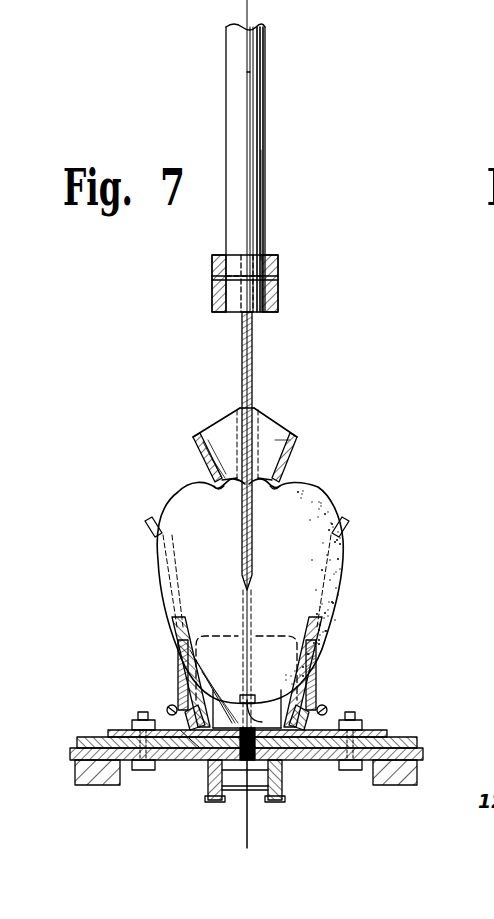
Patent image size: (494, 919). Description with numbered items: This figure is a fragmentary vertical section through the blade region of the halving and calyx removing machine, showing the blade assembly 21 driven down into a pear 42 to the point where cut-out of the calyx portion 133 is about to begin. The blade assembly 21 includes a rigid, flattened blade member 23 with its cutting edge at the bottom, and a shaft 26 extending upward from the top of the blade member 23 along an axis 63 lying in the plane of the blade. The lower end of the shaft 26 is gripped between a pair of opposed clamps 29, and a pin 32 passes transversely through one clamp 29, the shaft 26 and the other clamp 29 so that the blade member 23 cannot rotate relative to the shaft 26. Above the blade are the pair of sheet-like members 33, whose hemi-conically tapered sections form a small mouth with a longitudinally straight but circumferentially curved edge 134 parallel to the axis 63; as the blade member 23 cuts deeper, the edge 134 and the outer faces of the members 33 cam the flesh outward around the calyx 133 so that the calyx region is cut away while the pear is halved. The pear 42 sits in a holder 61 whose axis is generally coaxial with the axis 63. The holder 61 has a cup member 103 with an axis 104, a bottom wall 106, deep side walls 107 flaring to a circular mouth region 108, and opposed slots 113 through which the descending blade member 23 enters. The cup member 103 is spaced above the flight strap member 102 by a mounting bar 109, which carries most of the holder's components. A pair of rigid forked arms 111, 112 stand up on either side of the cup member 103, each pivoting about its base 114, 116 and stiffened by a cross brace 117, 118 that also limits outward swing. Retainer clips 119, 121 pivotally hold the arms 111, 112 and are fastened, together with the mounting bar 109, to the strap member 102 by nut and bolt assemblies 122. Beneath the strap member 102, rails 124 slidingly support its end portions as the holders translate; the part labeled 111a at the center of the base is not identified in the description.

The blade assembly 21 is at (272, 116).
The axis 63 is at (246, 72).
The shaft 26 is at (272, 200).
The clamps 29 is at (278, 301).
The pin 32 is at (212, 278).
The blade member 23 is at (241, 540).
The sheet-like members 33 is at (196, 443).
The calyx portion 133 is at (278, 442).
The edge 134 is at (207, 485).
The pear 42 is at (167, 516).
The arm 111 is at (145, 528).
The arm 112 is at (352, 528).
The slots 113 is at (262, 637).
The holder 61 is at (172, 632).
The cup member 103 is at (180, 665).
The cross brace 117 is at (168, 707).
The side walls 107 is at (318, 670).
The mouth region 108 is at (312, 648).
The cross brace 118 is at (326, 707).
The bottom wall 106 is at (215, 762).
The base 116 is at (302, 762).
The center boss 111a is at (280, 768).
The retainer clip 121 is at (380, 732).
The retainer clip 119 is at (108, 737).
The mounting bar 109 is at (417, 745).
The rails 124 is at (78, 781).
The flight strap member 102 is at (420, 762).
The nut and bolt assemblies 122 is at (143, 772).
The base 114 is at (190, 752).
The axis 104 is at (248, 843).